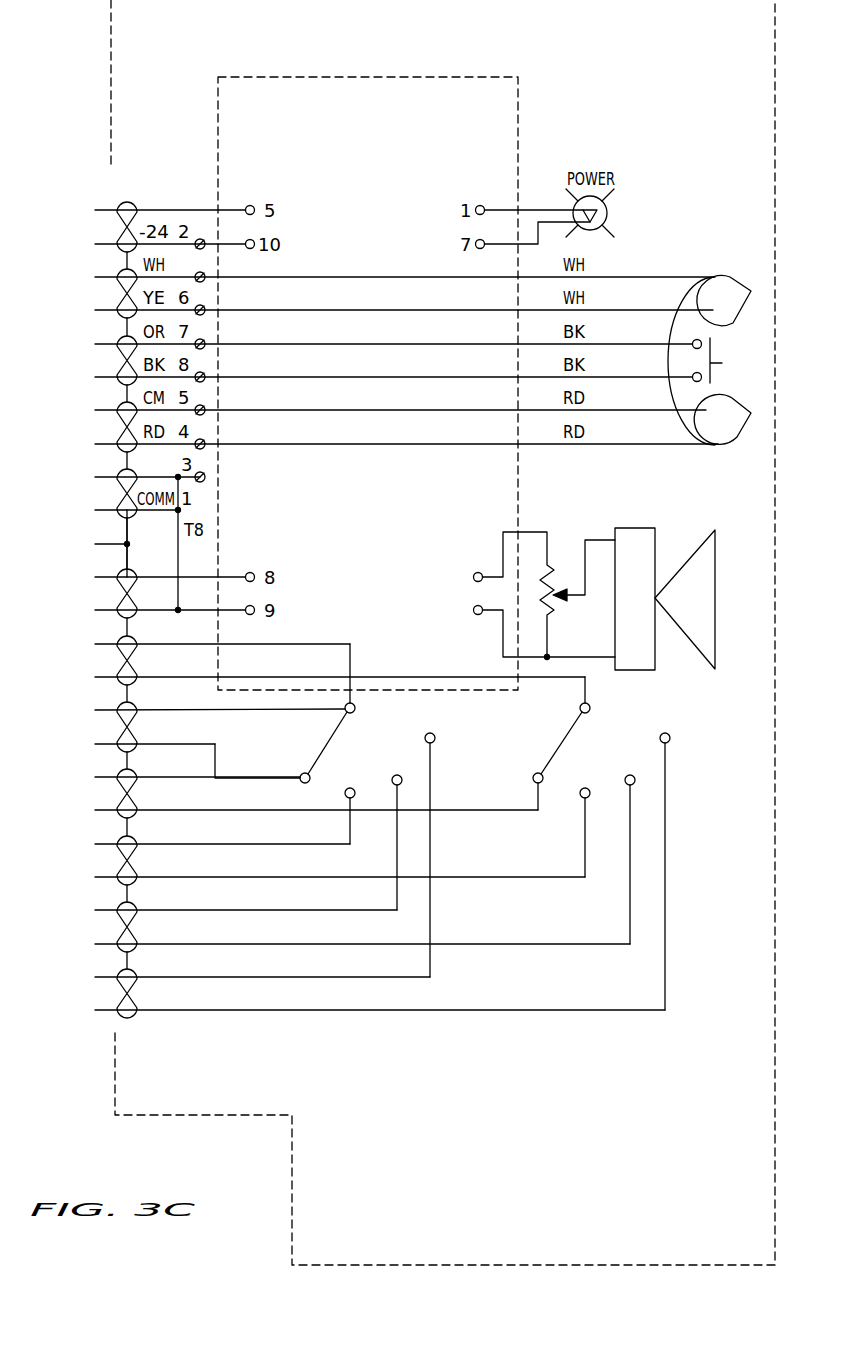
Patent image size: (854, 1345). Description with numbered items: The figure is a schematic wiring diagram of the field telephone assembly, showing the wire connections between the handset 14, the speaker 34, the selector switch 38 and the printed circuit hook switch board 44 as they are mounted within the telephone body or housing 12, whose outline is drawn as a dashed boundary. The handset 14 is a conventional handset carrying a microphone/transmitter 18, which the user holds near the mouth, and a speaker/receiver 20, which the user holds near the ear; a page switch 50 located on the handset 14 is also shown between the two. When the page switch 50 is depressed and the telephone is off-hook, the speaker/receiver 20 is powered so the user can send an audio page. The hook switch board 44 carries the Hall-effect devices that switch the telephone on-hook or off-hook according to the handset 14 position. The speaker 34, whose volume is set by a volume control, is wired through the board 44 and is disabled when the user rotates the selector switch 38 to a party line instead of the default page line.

The telephone body or housing 12 is at (478, 1116).
The handset 14 is at (717, 357).
The microphone/transmitter 18 is at (737, 437).
The speaker/receiver 20 is at (733, 308).
The speaker 34 is at (702, 642).
The selector switch 38 is at (489, 780).
The Hall-effect printed circuit hook switch board 44 is at (500, 77).
The page switch 50 is at (713, 348).